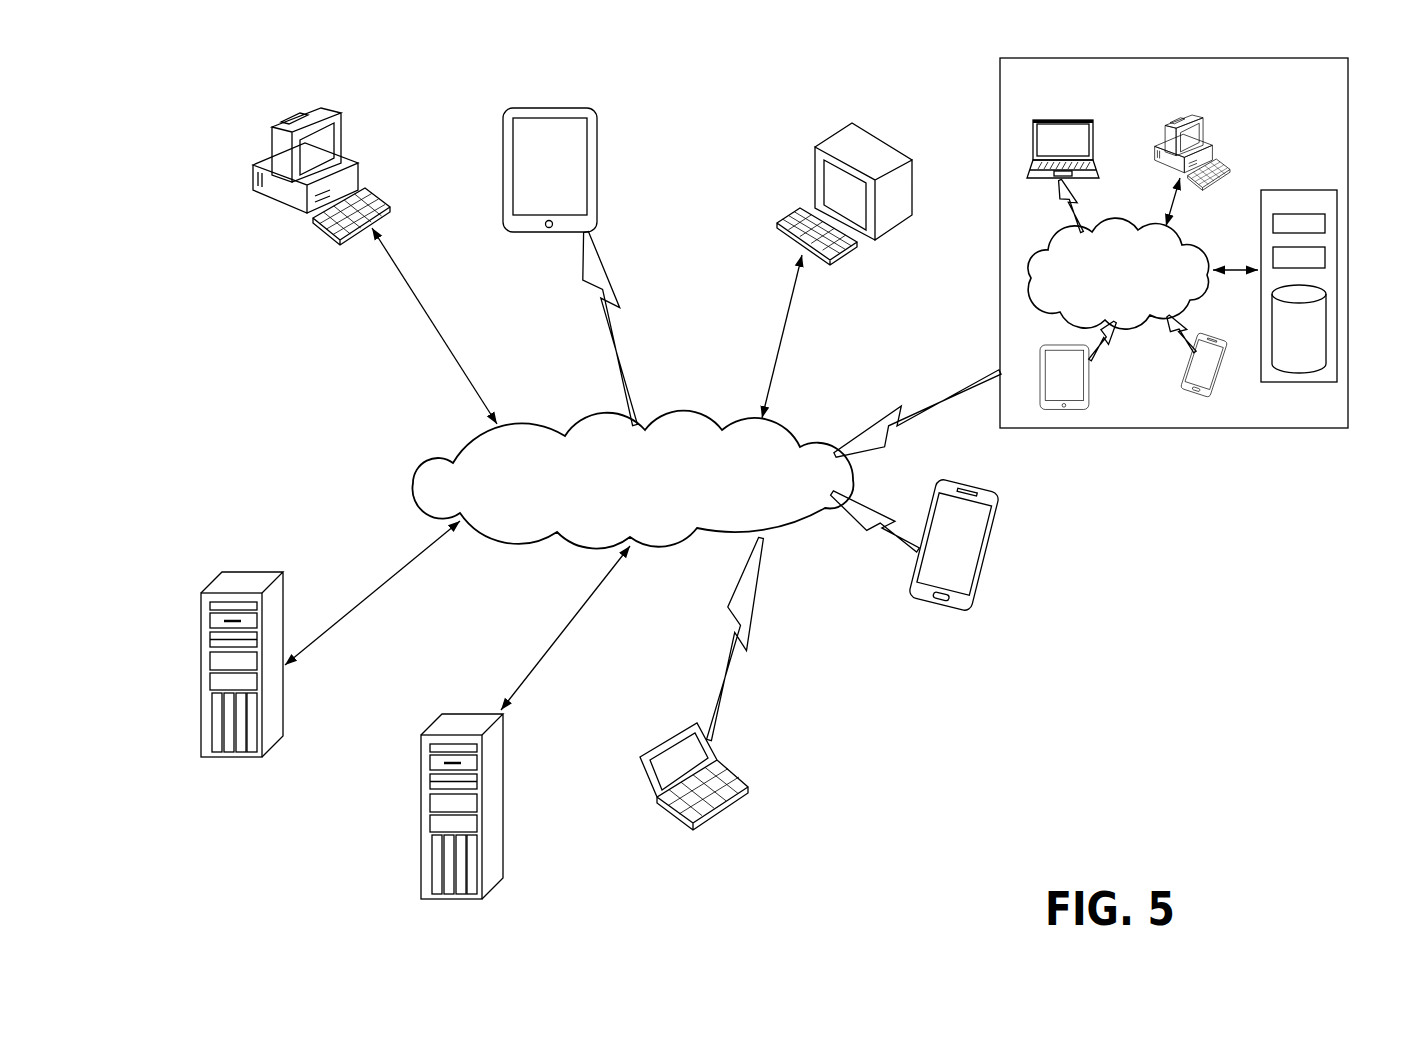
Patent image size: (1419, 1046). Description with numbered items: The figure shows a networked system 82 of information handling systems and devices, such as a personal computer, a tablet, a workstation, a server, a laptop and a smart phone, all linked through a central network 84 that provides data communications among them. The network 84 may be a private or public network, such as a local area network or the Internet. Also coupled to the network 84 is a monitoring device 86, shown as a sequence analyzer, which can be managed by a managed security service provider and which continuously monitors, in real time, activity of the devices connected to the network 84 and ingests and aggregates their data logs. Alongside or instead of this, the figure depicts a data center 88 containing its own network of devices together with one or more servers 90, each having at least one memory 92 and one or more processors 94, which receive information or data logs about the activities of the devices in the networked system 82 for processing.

The networked system 82 is at (223, 395).
The network 84 is at (677, 411).
The monitoring device 86 is at (502, 818).
The data center 88 is at (1195, 294).
The server 90 is at (1326, 270).
The memory 92 is at (1322, 340).
The processor 94 is at (1328, 257).